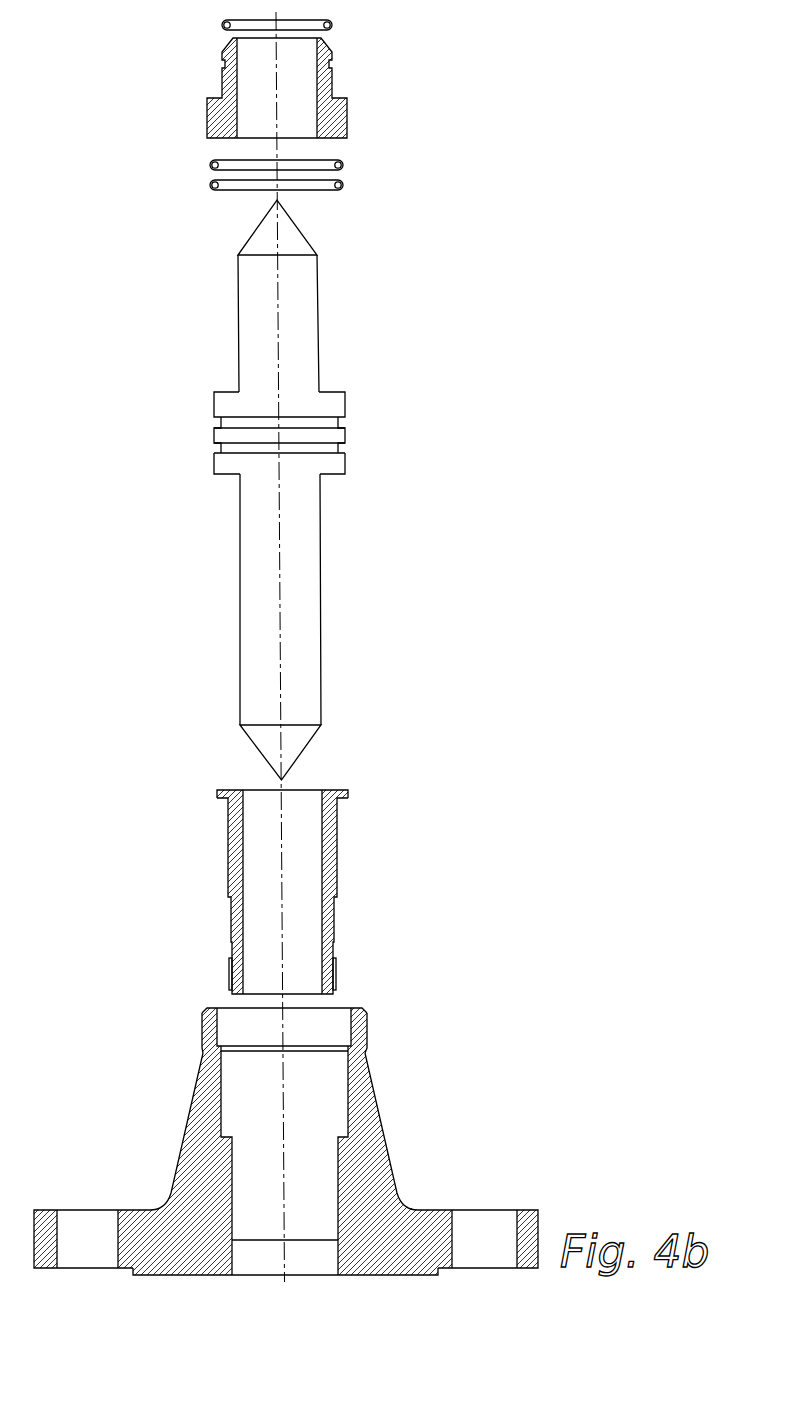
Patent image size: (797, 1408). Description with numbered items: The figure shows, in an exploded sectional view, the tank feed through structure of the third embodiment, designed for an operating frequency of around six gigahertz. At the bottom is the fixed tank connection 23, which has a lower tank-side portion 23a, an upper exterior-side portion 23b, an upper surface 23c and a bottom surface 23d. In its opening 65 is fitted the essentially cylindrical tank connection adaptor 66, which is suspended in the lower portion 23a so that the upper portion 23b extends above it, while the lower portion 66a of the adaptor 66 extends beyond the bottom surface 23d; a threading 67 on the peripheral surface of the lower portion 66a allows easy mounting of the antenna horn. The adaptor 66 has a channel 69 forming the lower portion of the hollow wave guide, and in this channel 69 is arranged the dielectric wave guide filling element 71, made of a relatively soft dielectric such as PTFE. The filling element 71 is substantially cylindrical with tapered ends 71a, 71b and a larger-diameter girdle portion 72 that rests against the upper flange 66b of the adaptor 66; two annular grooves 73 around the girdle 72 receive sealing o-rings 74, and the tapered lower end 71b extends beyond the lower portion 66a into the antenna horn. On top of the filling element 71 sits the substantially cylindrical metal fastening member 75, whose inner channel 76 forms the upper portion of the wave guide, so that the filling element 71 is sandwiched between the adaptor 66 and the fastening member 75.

The inner channel 76 is at (302, 67).
The metal fastening member 75 is at (327, 85).
The o-rings 74 is at (320, 157).
The tapered end 71a is at (304, 233).
The dielectric wave guide filling element 71 is at (305, 597).
The girdle portion 72 is at (346, 405).
The annular grooves 73 is at (339, 422).
The tapered lower end 71b is at (302, 752).
The tank connection adaptor 66 is at (333, 832).
The upper flange 66b is at (222, 790).
The channel 69 is at (262, 817).
The lower portion 66a is at (243, 975).
The threading 67 is at (232, 978).
The opening 65 is at (305, 1027).
The upper surface 23c is at (360, 1005).
The upper portion 23b is at (355, 1067).
The lower portion 23a is at (337, 1255).
The fixed tank connection 23 is at (177, 1175).
The bottom surface 23d is at (367, 1275).